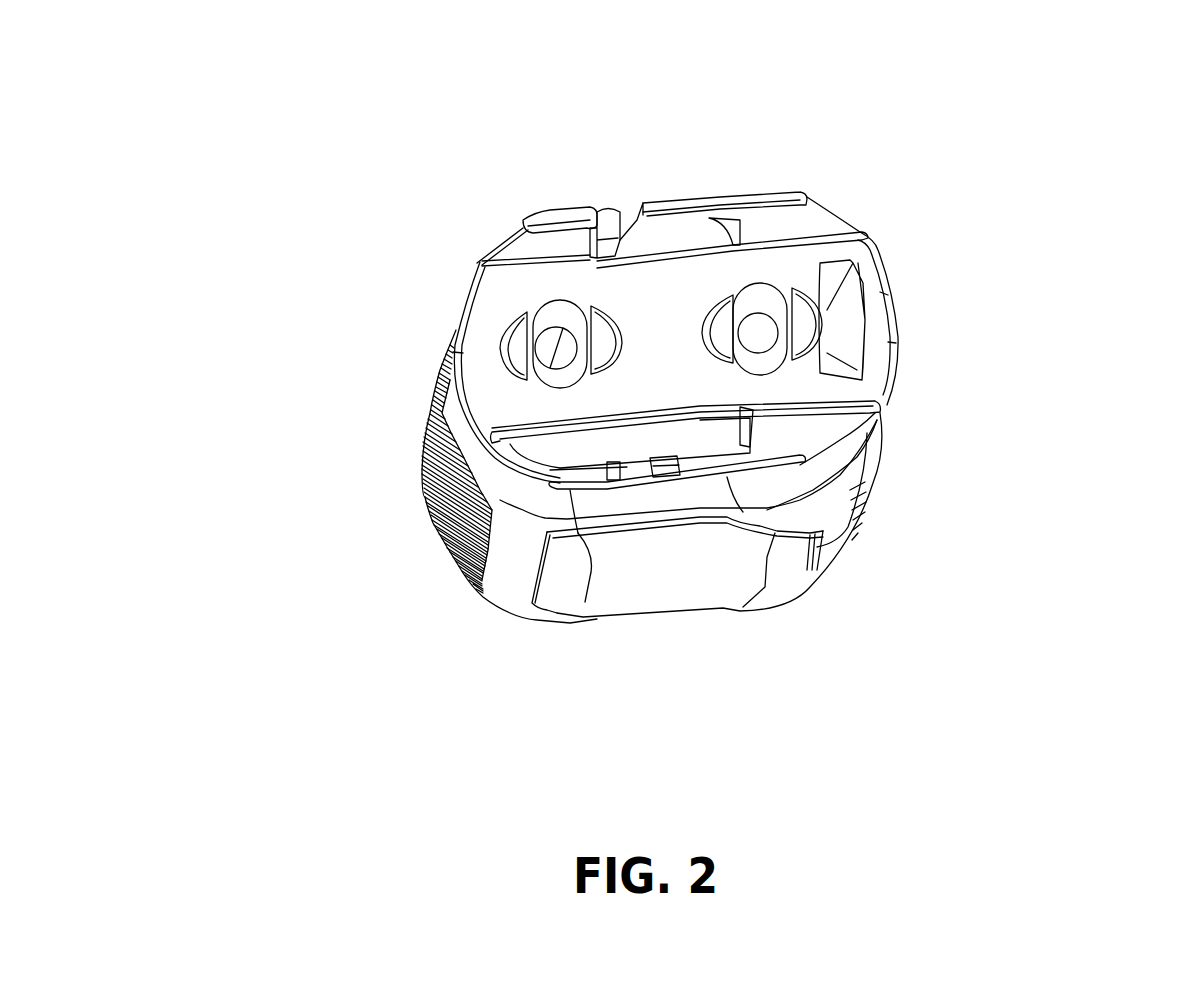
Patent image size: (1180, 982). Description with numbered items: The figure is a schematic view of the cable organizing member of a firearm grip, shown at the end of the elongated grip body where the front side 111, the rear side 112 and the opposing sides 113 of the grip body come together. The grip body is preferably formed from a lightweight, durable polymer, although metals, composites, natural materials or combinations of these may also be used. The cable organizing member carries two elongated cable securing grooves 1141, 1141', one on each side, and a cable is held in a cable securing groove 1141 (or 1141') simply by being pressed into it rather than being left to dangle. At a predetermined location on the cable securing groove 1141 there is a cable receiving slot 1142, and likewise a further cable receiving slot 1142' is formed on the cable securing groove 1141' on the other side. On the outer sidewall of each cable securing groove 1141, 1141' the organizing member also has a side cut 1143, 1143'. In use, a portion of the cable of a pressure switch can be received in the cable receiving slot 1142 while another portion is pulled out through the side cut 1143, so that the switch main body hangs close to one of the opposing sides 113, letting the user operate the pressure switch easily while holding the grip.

The front side 111 is at (423, 445).
The rear side 112 is at (877, 425).
The opposing sides 113 is at (628, 583).
The cable securing groove 1141 is at (778, 462).
The cable receiving slot 1142 is at (753, 532).
The side cut 1143 is at (744, 594).
The cable securing groove 1141' is at (744, 215).
The cable receiving slot 1142' is at (740, 169).
The side cut 1143' is at (667, 143).